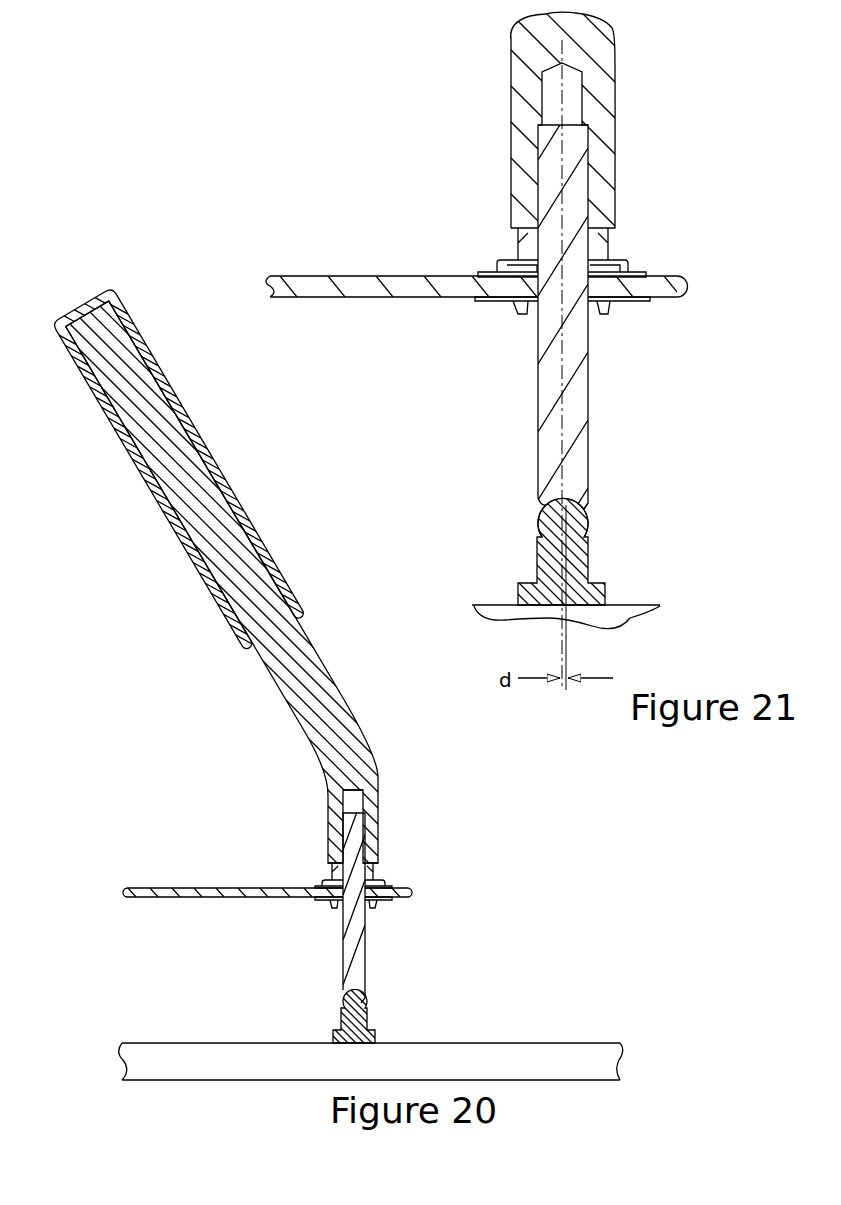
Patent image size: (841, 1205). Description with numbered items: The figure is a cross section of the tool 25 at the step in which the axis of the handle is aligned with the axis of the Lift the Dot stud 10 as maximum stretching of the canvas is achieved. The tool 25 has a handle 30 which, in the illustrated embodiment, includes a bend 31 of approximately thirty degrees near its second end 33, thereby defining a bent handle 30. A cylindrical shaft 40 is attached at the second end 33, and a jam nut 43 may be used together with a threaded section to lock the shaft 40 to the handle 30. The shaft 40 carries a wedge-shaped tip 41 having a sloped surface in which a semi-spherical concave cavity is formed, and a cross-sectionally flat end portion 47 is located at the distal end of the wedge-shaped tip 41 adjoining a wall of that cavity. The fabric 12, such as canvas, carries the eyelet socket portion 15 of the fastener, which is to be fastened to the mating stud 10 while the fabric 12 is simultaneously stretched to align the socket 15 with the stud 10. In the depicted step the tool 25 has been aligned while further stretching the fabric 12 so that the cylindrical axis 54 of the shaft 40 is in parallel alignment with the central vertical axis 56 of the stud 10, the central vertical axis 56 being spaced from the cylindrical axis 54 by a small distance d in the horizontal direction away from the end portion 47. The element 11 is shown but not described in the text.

In FIG. 21, the Lift the Dot stud 10 is at (592, 553).
In FIG. 21, the ball head of stud 11 is at (537, 512).
In FIG. 21, the fabric 12 is at (402, 274).
In FIG. 20, the fabric 12 is at (203, 887).
In FIG. 21, the eyelet socket portion 15 is at (496, 259).
In FIG. 20, the eyelet socket portion 15 is at (330, 879).
In FIG. 20, the tool 25 is at (420, 575).
In FIG. 20, the handle 30 is at (145, 491).
In FIG. 20, the bend 31 is at (357, 721).
In FIG. 21, the second end 33 is at (620, 106).
In FIG. 20, the second end 33 is at (378, 830).
In FIG. 21, the cylindrical shaft 40 is at (591, 370).
In FIG. 20, the cylindrical shaft 40 is at (367, 952).
In FIG. 21, the wedge-shaped tip 41 is at (541, 494).
In FIG. 21, the jam nut 43 is at (613, 244).
In FIG. 20, the jam nut 43 is at (373, 870).
In FIG. 21, the end portion 47 is at (596, 511).
In FIG. 21, the cylindrical axis 54 is at (570, 661).
In FIG. 21, the central vertical axis 56 is at (560, 653).